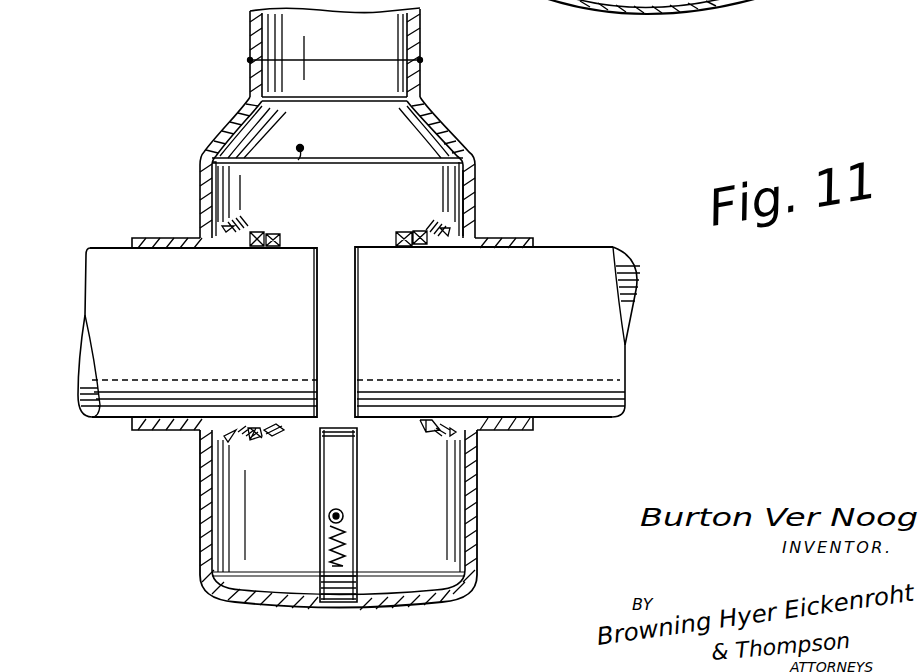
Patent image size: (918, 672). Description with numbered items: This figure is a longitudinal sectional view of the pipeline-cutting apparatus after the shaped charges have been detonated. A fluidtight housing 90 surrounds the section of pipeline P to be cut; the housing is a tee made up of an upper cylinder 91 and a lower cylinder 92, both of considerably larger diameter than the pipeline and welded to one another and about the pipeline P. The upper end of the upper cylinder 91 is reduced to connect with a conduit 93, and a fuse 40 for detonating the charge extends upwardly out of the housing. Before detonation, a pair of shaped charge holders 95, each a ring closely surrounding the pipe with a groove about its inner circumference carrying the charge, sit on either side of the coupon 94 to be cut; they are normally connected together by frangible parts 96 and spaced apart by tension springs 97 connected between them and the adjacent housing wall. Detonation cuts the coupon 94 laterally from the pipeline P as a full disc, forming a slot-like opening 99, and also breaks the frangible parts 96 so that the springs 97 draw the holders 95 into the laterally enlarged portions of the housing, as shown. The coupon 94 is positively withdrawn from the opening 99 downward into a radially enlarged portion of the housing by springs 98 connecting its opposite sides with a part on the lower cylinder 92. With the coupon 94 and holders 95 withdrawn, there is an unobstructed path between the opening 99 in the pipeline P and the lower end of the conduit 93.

The housing 90 is at (200, 145).
The conduit 93 is at (422, 34).
The upper cylinder 91 is at (480, 178).
The lower cylinder 92 is at (200, 513).
The fuse 40 is at (310, 158).
The tension springs 97 is at (236, 225).
The frangible parts 96 is at (400, 236).
The shaped charge holders 95 is at (270, 432).
The opening 99 is at (322, 262).
The coupon 94 is at (358, 536).
The springs 98 is at (340, 514).
The pipeline P is at (583, 247).